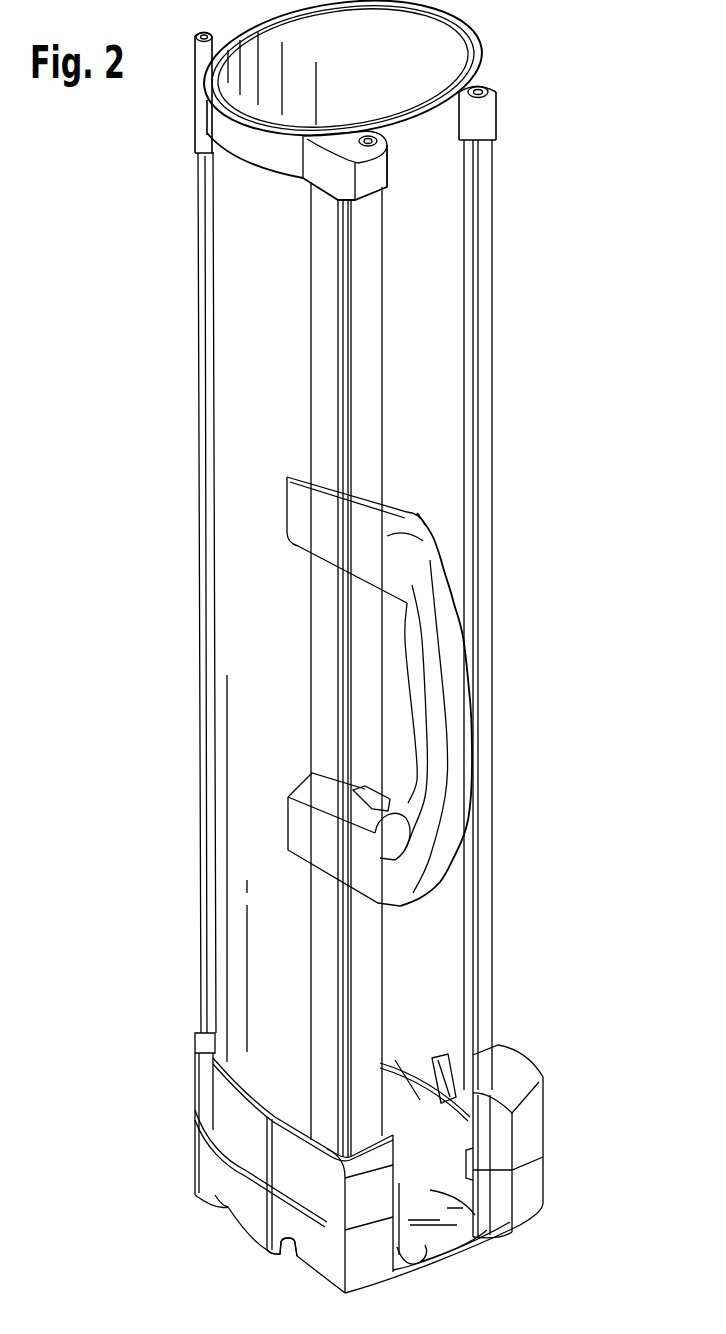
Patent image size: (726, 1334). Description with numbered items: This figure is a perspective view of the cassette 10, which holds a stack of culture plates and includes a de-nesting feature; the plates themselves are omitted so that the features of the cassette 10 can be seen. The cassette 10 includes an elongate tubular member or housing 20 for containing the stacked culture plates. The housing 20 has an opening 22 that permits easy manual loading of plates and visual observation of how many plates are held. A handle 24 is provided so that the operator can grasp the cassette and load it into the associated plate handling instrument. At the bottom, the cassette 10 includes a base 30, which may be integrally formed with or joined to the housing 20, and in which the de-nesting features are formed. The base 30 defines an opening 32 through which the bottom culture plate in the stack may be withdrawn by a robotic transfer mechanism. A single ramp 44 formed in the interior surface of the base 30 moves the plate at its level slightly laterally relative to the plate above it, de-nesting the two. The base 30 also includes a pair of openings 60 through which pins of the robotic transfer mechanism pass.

The cassette 10 is at (508, 281).
The tubular member or housing 20 is at (253, 632).
The opening 22 is at (431, 312).
The handle 24 is at (320, 528).
The base 30 is at (530, 1137).
The opening 32 is at (459, 1122).
The ramp 44 is at (440, 1060).
The openings 60 is at (223, 1207).